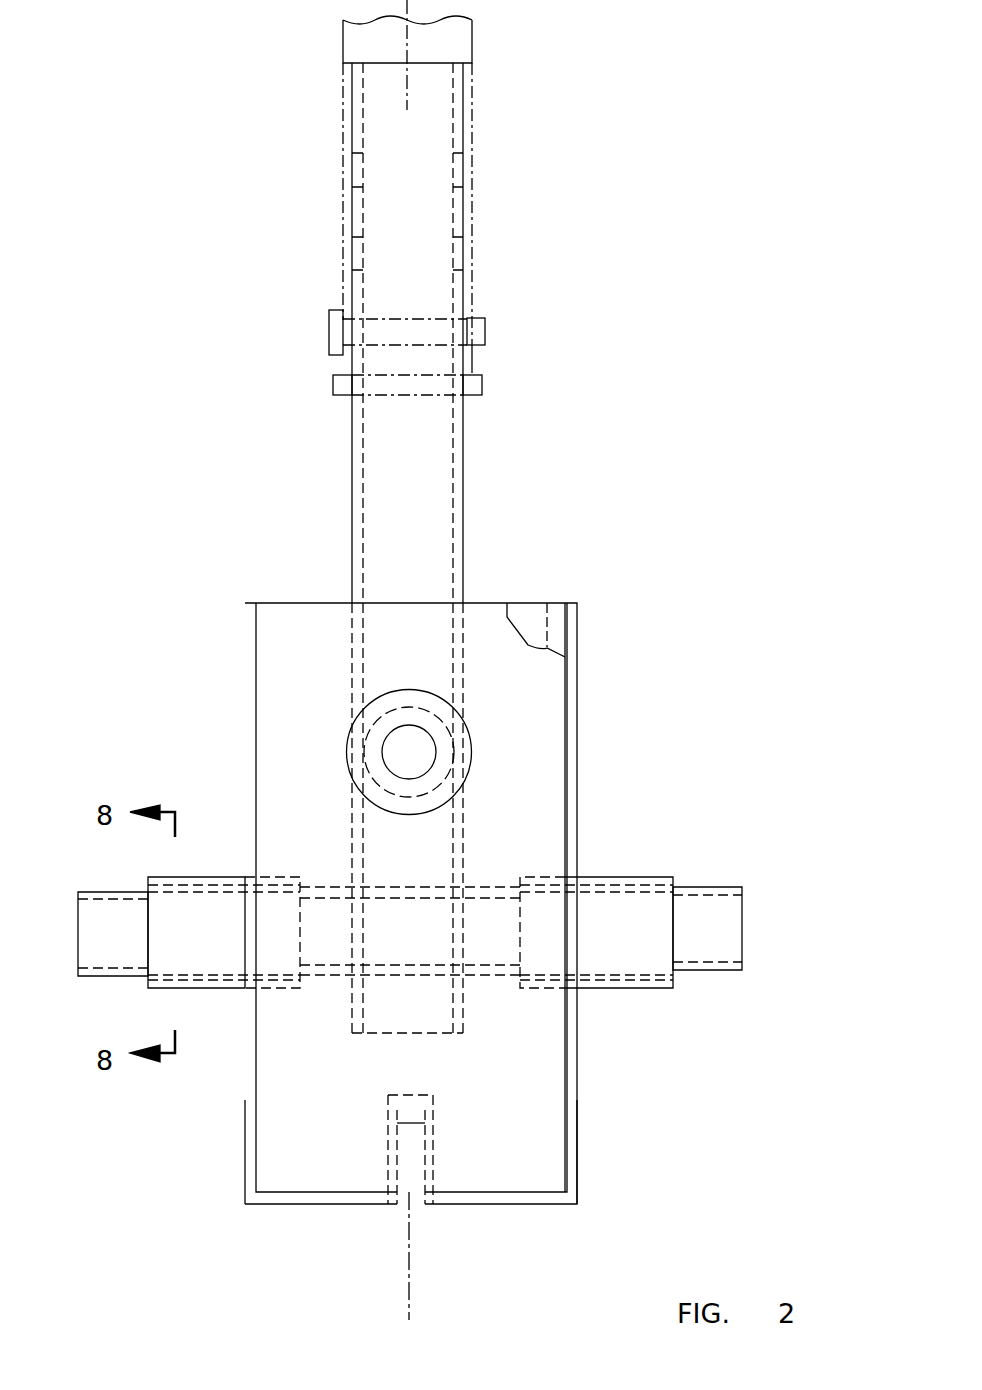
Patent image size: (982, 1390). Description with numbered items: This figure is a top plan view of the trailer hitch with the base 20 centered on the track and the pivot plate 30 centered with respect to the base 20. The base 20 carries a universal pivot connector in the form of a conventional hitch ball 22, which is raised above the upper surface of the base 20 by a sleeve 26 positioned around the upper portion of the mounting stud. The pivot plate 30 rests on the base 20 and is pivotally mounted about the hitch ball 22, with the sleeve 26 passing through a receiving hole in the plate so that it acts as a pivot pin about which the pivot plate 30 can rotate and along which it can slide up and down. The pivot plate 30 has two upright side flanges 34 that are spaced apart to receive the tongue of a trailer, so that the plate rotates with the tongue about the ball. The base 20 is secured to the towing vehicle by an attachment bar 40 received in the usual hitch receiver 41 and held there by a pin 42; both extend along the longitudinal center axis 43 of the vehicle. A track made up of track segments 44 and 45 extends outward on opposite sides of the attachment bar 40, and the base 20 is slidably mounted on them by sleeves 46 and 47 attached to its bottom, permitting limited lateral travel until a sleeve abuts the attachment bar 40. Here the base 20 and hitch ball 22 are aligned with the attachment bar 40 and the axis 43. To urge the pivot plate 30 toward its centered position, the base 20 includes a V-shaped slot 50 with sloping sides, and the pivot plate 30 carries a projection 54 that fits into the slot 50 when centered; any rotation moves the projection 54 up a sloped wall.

The base 20 is at (565, 615).
The hitch ball 22 is at (462, 750).
The sleeve 26 is at (355, 755).
The pivot plate 30 is at (270, 640).
The side flanges 34 is at (577, 1105).
The attachment bar 40 is at (465, 466).
The hitch receiver 41 is at (472, 160).
The pin 42 is at (485, 330).
The longitudinal center axis 43 is at (405, 1285).
The track segment 44 is at (112, 892).
The track segment 45 is at (690, 887).
The sleeve 46 is at (160, 988).
The sleeve 47 is at (622, 990).
The slot 50 is at (405, 1095).
The projection 54 is at (418, 1145).